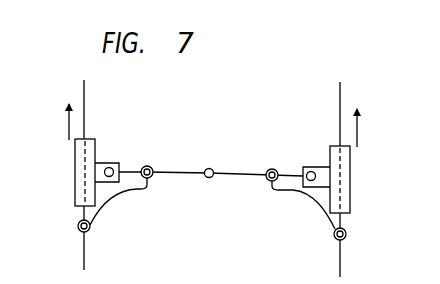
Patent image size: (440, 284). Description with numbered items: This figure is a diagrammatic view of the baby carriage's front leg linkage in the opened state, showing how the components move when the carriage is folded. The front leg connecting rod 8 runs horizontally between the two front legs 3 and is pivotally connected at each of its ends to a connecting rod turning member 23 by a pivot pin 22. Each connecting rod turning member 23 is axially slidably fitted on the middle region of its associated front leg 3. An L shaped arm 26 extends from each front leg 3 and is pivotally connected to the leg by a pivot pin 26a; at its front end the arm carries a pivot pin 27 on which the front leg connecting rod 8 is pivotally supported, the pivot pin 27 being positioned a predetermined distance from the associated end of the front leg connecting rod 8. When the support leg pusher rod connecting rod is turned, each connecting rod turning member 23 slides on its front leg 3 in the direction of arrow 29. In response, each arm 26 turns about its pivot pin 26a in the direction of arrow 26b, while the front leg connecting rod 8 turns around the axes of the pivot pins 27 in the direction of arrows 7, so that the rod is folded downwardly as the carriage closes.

The front leg 3 is at (83, 94).
The arrow 29 is at (66, 128).
The connecting rod turning member 23 is at (75, 176).
The pivot pin 22 is at (109, 167).
The front leg connecting rod 8 is at (237, 170).
The pivot pin 27 is at (151, 180).
The L shaped arm 26 is at (103, 205).
The pivot pin 26a is at (89, 230).
The arrow 26b is at (130, 199).
The arrows 7 is at (239, 217).